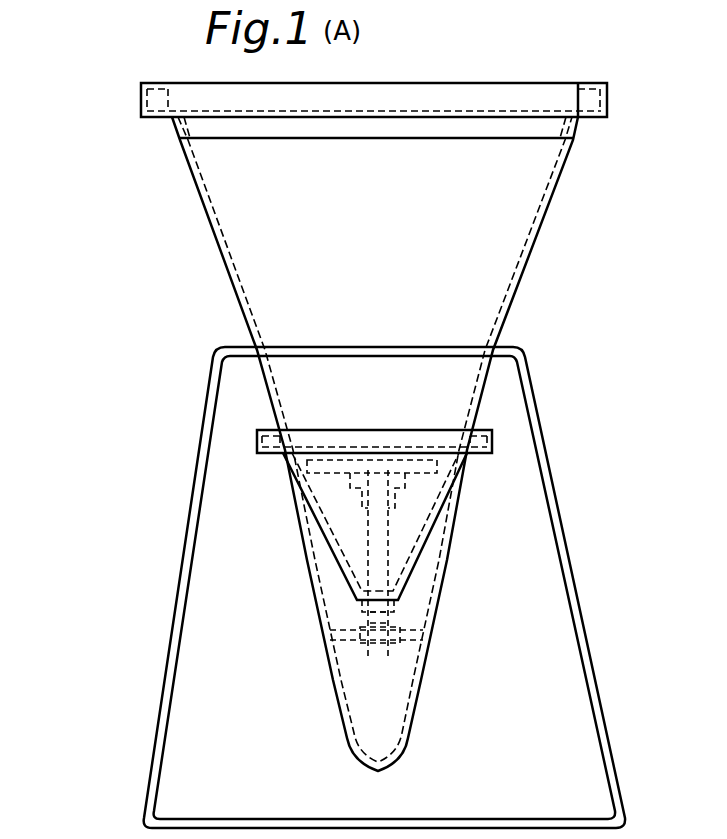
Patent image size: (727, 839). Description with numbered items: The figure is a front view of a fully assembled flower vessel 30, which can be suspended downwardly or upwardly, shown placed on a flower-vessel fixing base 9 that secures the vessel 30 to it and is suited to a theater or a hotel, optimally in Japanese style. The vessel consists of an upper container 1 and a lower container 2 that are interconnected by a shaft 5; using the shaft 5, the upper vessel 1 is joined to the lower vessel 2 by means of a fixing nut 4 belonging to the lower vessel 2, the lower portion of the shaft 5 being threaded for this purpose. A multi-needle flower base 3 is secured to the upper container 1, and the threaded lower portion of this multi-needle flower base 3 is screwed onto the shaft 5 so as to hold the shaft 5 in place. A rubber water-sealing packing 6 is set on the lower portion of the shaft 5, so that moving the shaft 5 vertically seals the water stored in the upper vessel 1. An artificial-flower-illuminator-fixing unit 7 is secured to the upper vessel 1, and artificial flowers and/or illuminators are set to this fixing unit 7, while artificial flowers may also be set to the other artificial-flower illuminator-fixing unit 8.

The flower vessel 30 is at (125, 183).
The upper container 1 is at (383, 83).
The artificial-flower-illuminator-fixing unit 7 is at (590, 83).
The flower-vessel fixing base 9 is at (571, 577).
The multi-needle flower base 3 is at (385, 455).
The lower container 2 is at (373, 430).
The artificial-flower illuminator-fixing unit 8 is at (393, 525).
The shaft 5 is at (403, 583).
The water-sealing packing 6 is at (400, 605).
The fixing nut 4 is at (408, 630).